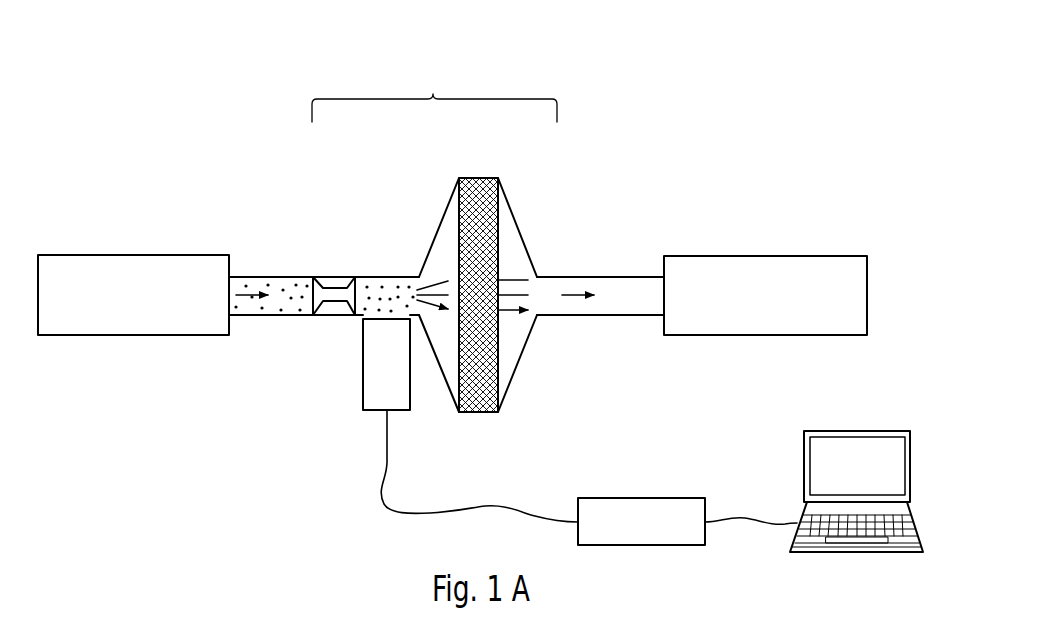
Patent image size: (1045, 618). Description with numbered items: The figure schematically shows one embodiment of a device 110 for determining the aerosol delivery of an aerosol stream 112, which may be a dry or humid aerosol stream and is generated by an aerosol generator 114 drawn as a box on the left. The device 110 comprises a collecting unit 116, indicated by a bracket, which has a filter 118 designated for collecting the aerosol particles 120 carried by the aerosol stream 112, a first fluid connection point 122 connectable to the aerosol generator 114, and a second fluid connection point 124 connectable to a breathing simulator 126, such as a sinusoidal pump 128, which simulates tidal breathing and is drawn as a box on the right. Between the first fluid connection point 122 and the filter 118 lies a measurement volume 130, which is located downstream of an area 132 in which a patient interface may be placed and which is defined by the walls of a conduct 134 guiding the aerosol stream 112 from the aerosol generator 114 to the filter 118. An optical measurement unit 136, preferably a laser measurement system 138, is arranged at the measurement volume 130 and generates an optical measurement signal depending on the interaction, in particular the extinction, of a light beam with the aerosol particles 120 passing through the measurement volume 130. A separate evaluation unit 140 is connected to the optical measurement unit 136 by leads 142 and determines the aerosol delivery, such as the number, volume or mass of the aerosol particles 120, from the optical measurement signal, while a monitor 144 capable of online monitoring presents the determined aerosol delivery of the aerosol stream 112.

The device 110 is at (809, 148).
The aerosol stream 112 is at (250, 320).
The aerosol generator 114 is at (103, 268).
The collecting unit 116 is at (433, 93).
The filter 118 is at (476, 178).
The aerosol particles 120 is at (287, 283).
The first fluid connection point 122 is at (248, 276).
The second fluid connection point 124 is at (539, 273).
The breathing simulator 126 is at (765, 262).
The sinusoidal pump 128 is at (757, 268).
The measurement volume 130 is at (401, 244).
The area 132 is at (333, 282).
The conduct 134 is at (380, 293).
The optical measurement unit 136 is at (325, 379).
The laser measurement system 138 is at (365, 395).
The evaluation unit 140 is at (646, 505).
The leads 142 is at (486, 506).
The monitor 144 is at (853, 447).